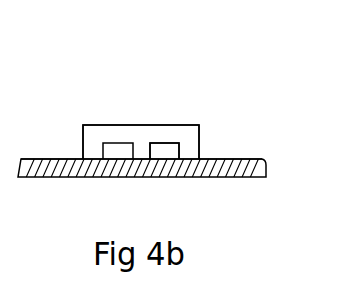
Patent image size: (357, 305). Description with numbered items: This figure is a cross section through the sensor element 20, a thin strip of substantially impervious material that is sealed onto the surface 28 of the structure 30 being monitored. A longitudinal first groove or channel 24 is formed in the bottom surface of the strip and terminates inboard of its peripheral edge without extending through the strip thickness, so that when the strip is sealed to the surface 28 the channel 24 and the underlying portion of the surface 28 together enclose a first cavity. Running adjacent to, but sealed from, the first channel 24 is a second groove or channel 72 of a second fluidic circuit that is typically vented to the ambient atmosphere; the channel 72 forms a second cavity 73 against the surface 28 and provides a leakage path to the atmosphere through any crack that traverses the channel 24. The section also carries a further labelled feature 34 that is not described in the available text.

The sensor 20 is at (182, 78).
The first groove or channel 24 is at (103, 151).
The surface 28 is at (231, 159).
The structure 30 is at (230, 167).
The electronic component 34 is at (110, 143).
The second groove or channel 72 is at (172, 143).
The second cavity 73 is at (162, 150).